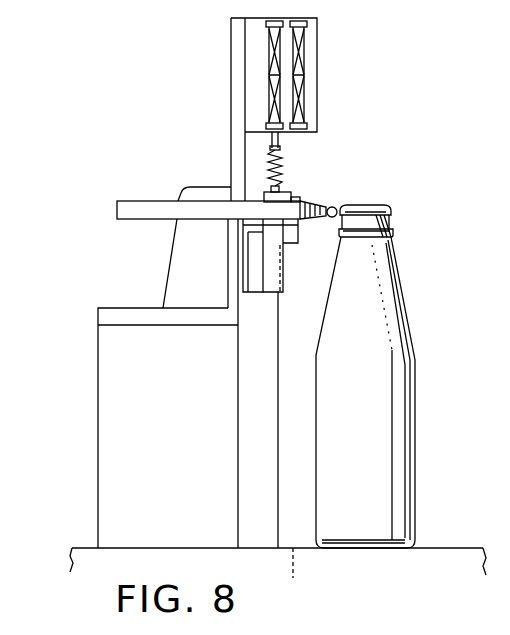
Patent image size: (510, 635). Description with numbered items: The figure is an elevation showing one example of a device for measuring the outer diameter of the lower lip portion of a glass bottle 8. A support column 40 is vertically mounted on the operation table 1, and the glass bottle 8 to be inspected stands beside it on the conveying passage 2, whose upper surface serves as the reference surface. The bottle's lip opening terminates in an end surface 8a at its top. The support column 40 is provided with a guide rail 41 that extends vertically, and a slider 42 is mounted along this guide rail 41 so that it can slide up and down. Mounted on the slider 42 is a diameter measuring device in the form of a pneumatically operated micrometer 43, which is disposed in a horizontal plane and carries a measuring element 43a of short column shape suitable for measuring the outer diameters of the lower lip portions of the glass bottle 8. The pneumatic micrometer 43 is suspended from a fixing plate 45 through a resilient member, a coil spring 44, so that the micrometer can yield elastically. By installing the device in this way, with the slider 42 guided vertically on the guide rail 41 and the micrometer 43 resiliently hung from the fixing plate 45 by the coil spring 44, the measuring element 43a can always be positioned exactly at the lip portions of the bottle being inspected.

The operation table 1 is at (72, 545).
The conveying passage 2 is at (437, 562).
The glass bottle 8 is at (416, 424).
The end surface of the lip opening 8a is at (390, 205).
The support column 40 is at (107, 407).
The guide rail 41 is at (273, 347).
The slider 42 is at (272, 268).
The pneumatically operated micrometer 43 is at (143, 203).
The measuring element 43a is at (336, 208).
The coil spring 44 is at (283, 181).
The fixing plate 45 is at (284, 150).